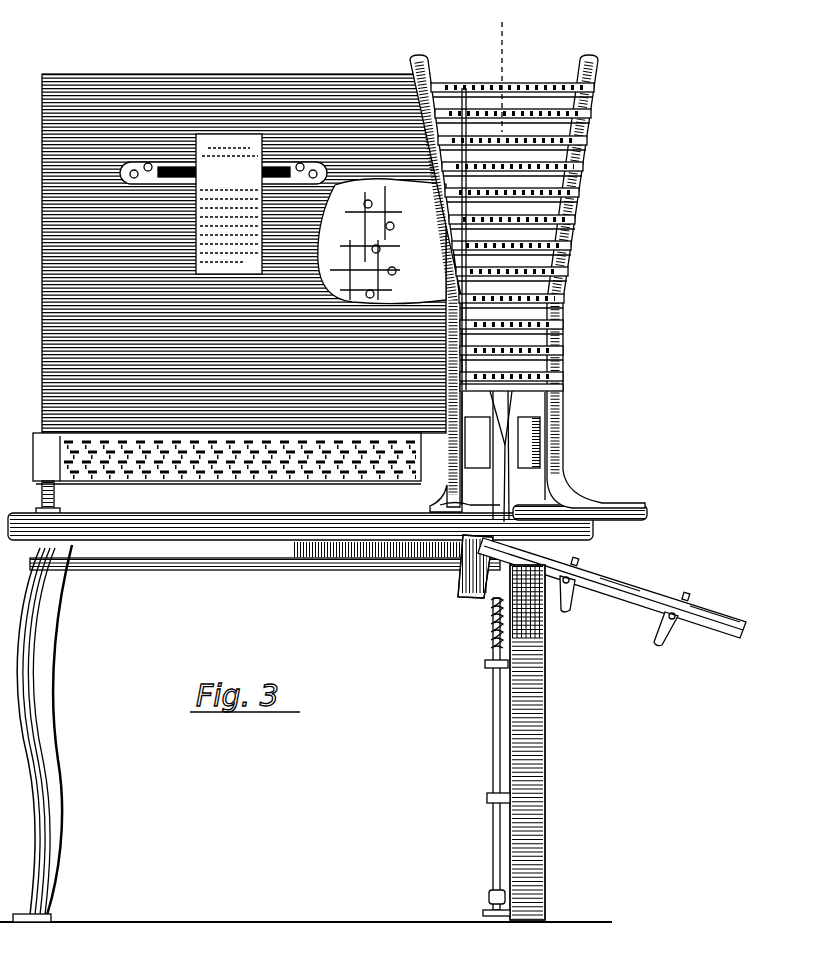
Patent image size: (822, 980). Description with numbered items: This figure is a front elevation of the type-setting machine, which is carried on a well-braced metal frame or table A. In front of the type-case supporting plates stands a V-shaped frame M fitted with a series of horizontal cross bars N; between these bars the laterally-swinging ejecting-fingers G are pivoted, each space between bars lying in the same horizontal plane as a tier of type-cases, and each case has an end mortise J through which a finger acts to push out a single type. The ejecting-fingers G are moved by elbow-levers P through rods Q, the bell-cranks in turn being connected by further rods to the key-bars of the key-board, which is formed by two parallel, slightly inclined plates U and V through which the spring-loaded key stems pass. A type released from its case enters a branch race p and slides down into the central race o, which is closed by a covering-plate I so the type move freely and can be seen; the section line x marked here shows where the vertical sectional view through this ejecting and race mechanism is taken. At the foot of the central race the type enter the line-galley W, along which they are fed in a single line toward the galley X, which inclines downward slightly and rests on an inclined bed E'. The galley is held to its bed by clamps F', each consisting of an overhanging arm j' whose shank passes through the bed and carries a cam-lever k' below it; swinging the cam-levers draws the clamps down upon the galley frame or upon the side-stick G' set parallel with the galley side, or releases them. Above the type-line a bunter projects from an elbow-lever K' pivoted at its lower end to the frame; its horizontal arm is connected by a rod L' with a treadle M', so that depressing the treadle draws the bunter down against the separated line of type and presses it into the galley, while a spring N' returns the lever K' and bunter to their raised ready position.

The section line x is at (500, 67).
The V-shaped frame M is at (520, 283).
The horizontal cross bars N is at (520, 139).
The ejecting-finger G is at (521, 234).
The covering-plate I is at (548, 300).
The elbow-lever P is at (396, 250).
The lever arm Q' is at (385, 270).
The rod Q is at (381, 272).
The branch race p is at (506, 414).
The central race o is at (512, 457).
The upper key-board plate U is at (227, 457).
The lower key-board plate V is at (270, 483).
The end mortise J is at (467, 514).
The line-galley W is at (580, 521).
The elbow-lever K' is at (452, 568).
The galley X is at (567, 582).
The cam-lever k' is at (619, 611).
The inclined bed E' is at (620, 595).
The overhanging arm j' is at (699, 587).
The side-stick G' is at (618, 588).
The clamp F' is at (710, 625).
The spring N' is at (480, 754).
The rod L' is at (503, 742).
The treadle M' is at (479, 855).
The frame or table A is at (56, 614).